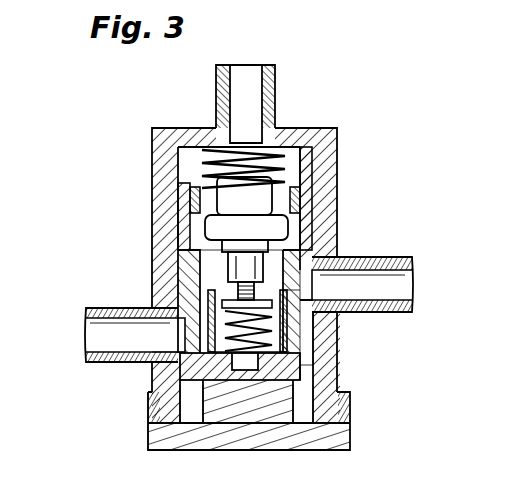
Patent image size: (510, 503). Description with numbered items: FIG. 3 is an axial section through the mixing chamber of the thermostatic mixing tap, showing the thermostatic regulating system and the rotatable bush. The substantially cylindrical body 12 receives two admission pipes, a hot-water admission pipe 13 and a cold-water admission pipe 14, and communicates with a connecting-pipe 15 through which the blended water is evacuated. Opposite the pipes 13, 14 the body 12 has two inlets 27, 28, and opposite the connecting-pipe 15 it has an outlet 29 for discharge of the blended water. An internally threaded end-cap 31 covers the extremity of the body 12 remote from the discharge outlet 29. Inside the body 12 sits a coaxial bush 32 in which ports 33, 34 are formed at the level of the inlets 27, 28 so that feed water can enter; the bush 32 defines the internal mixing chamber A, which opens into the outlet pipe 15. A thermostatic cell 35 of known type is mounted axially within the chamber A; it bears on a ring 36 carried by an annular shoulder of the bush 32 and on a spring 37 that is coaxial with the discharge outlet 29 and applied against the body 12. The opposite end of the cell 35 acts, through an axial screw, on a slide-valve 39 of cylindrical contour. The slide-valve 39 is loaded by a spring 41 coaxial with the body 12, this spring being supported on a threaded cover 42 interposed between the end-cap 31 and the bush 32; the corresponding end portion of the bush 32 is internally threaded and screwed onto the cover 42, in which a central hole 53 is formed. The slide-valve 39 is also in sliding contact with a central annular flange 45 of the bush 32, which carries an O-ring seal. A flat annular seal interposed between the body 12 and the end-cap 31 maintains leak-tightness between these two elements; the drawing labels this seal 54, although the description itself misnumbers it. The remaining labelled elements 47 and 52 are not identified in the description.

The cylindrical body 12 is at (342, 178).
The hot-water admission pipe 13 is at (95, 362).
The cold-water admission pipe 14 is at (395, 308).
The connecting-pipe 15 is at (277, 100).
The inlet 27 is at (210, 320).
The inlet 28 is at (316, 312).
The outlet 29 is at (246, 104).
The end-cap 31 is at (278, 432).
The bush 32 is at (310, 252).
The port 33 is at (183, 333).
The port 34 is at (314, 287).
The thermostatic cell 35 is at (238, 190).
The ring 36 is at (200, 192).
The spring 37 is at (296, 160).
The slide-valve 39 is at (275, 337).
The spring 41 is at (302, 368).
The threaded cover 42 is at (305, 404).
The central annular flange 45 is at (205, 300).
The passage 47 is at (172, 350).
The sleeve 52 is at (182, 225).
The central hole 53 is at (192, 404).
The flange 54 is at (163, 428).
The mixing chamber A is at (196, 248).